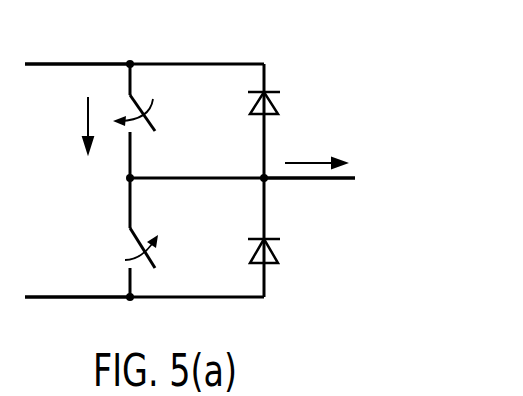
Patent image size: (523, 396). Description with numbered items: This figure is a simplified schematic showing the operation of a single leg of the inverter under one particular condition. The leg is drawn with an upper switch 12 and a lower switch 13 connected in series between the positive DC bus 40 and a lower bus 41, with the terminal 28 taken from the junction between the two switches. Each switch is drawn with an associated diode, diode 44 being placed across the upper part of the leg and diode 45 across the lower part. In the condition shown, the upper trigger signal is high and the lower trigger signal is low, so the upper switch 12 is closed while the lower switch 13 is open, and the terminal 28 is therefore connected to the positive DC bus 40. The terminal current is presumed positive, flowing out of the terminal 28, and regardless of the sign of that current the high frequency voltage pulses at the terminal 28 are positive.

The positive DC bus 40 is at (45, 63).
The lower power line 41 is at (63, 298).
The upper switch 12 is at (134, 96).
The lower switch 13 is at (140, 236).
The upper diode 44 is at (282, 112).
The lower diode 45 is at (272, 264).
The terminal 28 is at (292, 180).